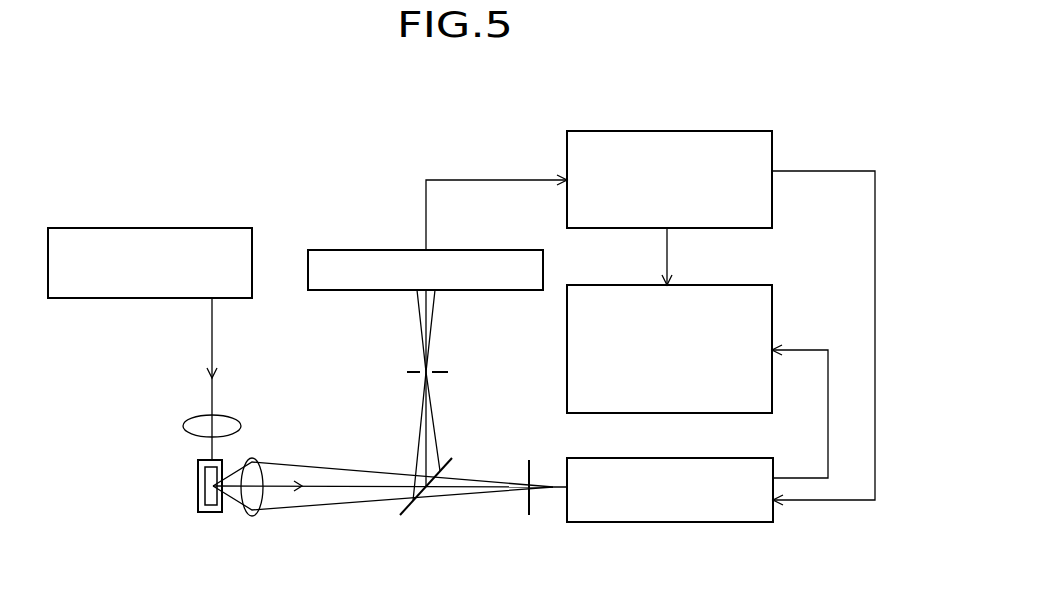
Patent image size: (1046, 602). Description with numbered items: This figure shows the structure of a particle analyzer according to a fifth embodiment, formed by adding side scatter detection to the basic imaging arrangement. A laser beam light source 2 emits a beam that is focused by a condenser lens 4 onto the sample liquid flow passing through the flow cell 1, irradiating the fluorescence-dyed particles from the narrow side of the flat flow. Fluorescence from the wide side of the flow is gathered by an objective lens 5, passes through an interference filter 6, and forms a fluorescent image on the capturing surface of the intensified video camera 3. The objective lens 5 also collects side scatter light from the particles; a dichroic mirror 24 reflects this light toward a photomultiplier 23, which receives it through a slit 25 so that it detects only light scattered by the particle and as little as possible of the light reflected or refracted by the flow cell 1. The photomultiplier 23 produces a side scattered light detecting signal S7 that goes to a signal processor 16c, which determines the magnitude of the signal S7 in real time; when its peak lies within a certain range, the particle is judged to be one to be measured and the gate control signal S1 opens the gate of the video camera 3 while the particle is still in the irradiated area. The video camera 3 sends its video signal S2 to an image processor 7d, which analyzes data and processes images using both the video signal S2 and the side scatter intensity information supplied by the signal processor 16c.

The flow cell 1 is at (197, 497).
The laser beam light source 2 is at (218, 229).
The video camera 3 is at (750, 522).
The condenser lens 4 is at (227, 418).
The objective lens 5 is at (259, 470).
The interference filter 6 is at (532, 470).
The image processor 7d is at (735, 285).
The signal processor 16c is at (763, 131).
The photomultiplier 23 is at (502, 250).
The dichroic mirror 24 is at (447, 455).
The slit 25 is at (443, 370).
The gate control signal S1 is at (823, 323).
The video signal S2 is at (801, 397).
The side scattered light detecting signal S7 is at (474, 212).